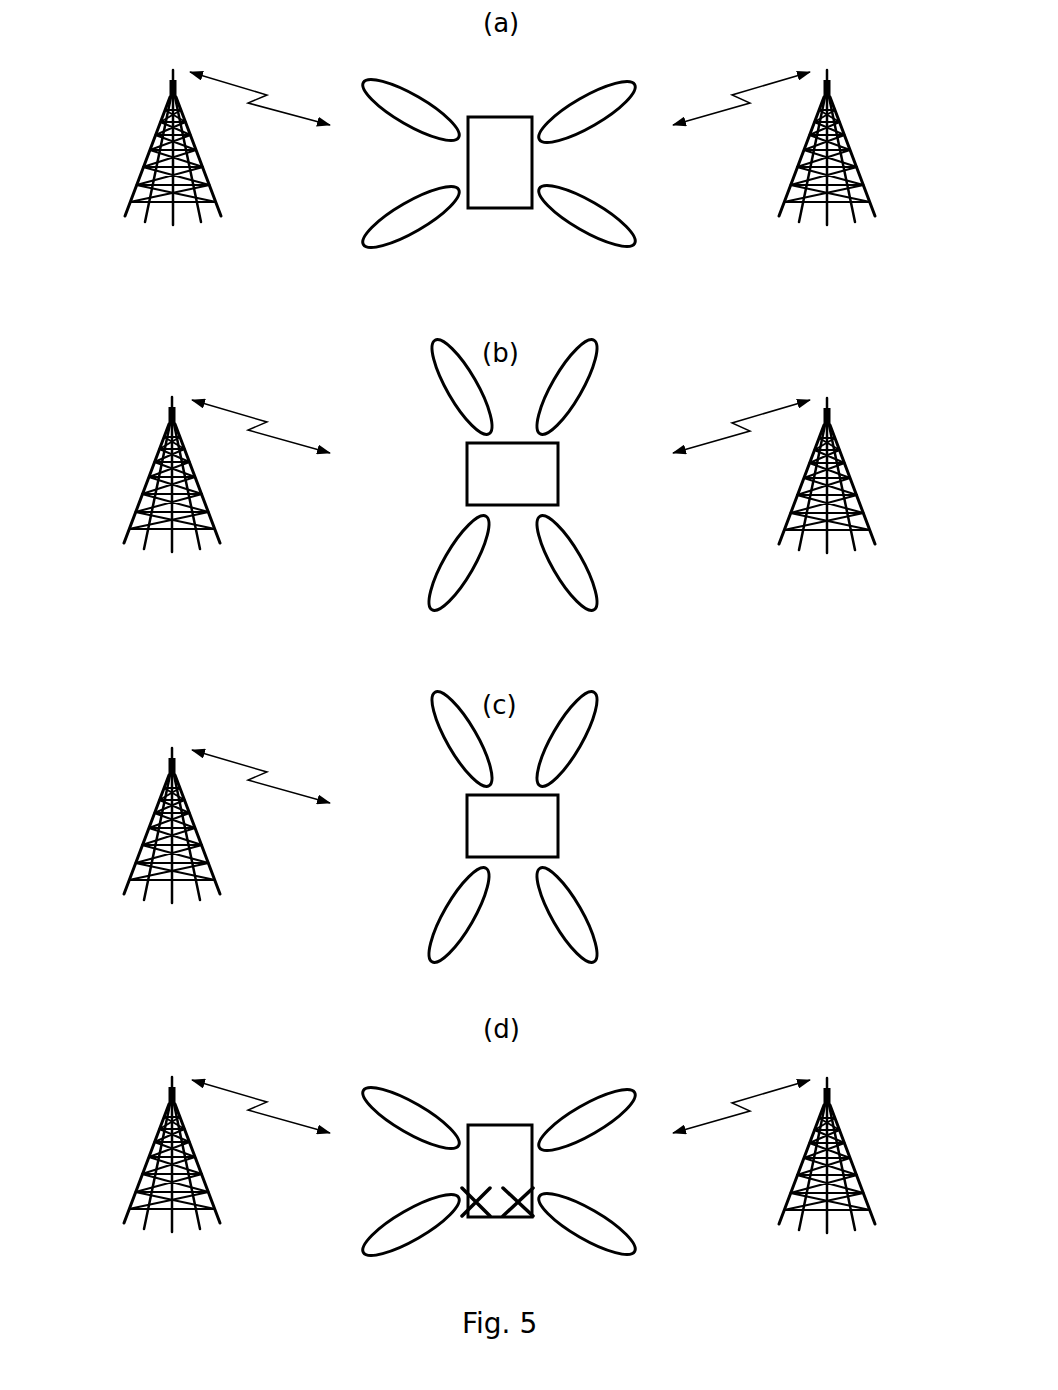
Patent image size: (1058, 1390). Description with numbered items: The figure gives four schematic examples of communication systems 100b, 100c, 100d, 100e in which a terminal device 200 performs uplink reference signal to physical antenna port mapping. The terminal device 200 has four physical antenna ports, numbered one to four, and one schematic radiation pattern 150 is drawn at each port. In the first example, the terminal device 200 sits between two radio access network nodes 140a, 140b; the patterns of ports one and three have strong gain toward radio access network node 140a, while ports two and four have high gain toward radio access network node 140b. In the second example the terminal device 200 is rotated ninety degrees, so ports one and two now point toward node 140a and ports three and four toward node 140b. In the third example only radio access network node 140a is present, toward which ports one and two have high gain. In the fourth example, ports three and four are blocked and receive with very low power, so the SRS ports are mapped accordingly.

The communication system 100b is at (312, 52).
The communication system 100c is at (325, 380).
The communication system 100d is at (323, 732).
The communication system 100e is at (337, 1058).
The radio access network node 140a is at (172, 90).
The radio access network node 140b is at (829, 87).
The radiation pattern 150 is at (428, 53).
The terminal device 200 is at (497, 210).